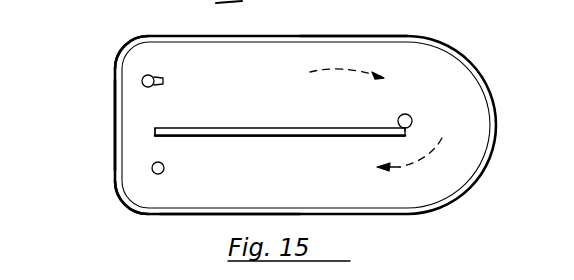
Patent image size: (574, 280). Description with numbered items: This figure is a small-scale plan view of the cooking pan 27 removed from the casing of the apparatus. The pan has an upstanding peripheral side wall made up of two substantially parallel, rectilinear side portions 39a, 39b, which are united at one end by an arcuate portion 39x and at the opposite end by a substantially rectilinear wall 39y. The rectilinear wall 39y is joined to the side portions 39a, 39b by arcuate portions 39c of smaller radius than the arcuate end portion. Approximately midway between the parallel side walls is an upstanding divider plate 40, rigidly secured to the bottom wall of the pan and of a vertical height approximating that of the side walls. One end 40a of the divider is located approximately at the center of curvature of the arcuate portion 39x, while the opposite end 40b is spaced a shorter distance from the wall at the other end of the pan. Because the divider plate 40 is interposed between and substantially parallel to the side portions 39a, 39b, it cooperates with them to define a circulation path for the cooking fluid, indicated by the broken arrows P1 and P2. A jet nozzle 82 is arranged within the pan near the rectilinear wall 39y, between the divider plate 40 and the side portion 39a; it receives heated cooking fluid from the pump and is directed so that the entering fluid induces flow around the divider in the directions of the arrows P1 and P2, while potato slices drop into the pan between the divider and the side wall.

The cooking pan 27 is at (88, 179).
The rectilinear side portion 39a is at (347, 33).
The rectilinear side portion 39b is at (228, 215).
The arcuate portions 39c is at (117, 58).
The arcuate portion 39x is at (496, 148).
The rectilinear wall 39y is at (117, 135).
The divider plate 40 is at (350, 128).
The end of divider 40a is at (410, 133).
The opposite end of divider 40b is at (152, 128).
The jet nozzle 82 is at (163, 76).
The broken arrow P1 is at (368, 69).
The broken arrow P2 is at (407, 168).